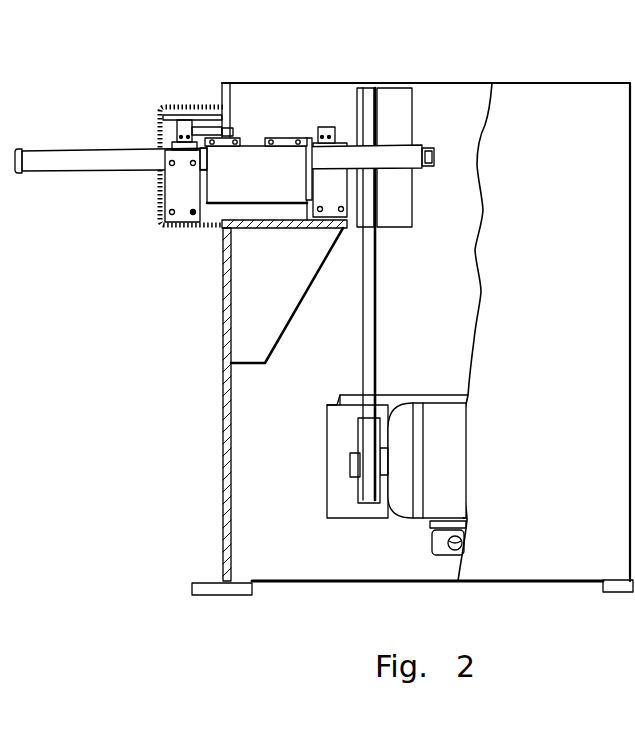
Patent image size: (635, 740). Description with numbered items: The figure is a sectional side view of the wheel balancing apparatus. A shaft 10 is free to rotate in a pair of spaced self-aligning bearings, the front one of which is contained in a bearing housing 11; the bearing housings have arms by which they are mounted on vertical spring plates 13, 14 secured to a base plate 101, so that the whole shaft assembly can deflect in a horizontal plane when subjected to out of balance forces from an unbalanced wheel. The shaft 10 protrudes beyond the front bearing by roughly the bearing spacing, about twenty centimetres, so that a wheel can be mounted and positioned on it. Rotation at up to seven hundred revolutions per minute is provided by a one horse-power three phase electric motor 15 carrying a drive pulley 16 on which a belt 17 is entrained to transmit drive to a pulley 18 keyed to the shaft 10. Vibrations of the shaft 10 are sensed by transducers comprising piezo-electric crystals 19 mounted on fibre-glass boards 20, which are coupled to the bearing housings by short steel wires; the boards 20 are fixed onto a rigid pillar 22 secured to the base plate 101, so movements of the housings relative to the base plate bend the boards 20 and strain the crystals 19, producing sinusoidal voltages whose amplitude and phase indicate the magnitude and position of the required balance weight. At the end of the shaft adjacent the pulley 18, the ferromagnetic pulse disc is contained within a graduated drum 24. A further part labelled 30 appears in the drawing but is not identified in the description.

The shaft 10 is at (78, 160).
The bearing housing 11 is at (163, 147).
The vertical spring plate 13 is at (182, 204).
The vertical spring plate 14 is at (325, 206).
The electric motor 15 is at (408, 505).
The drive pulley 16 is at (352, 455).
The belt 17 is at (370, 357).
The pulley 18 is at (357, 106).
The piezo-electric crystal 19 is at (314, 137).
The fibre-glass board 20 is at (203, 142).
The rigid pillar 22 is at (255, 147).
The graduated drum 24 is at (405, 217).
The bracket 30 is at (306, 140).
The base plate 101 is at (257, 183).